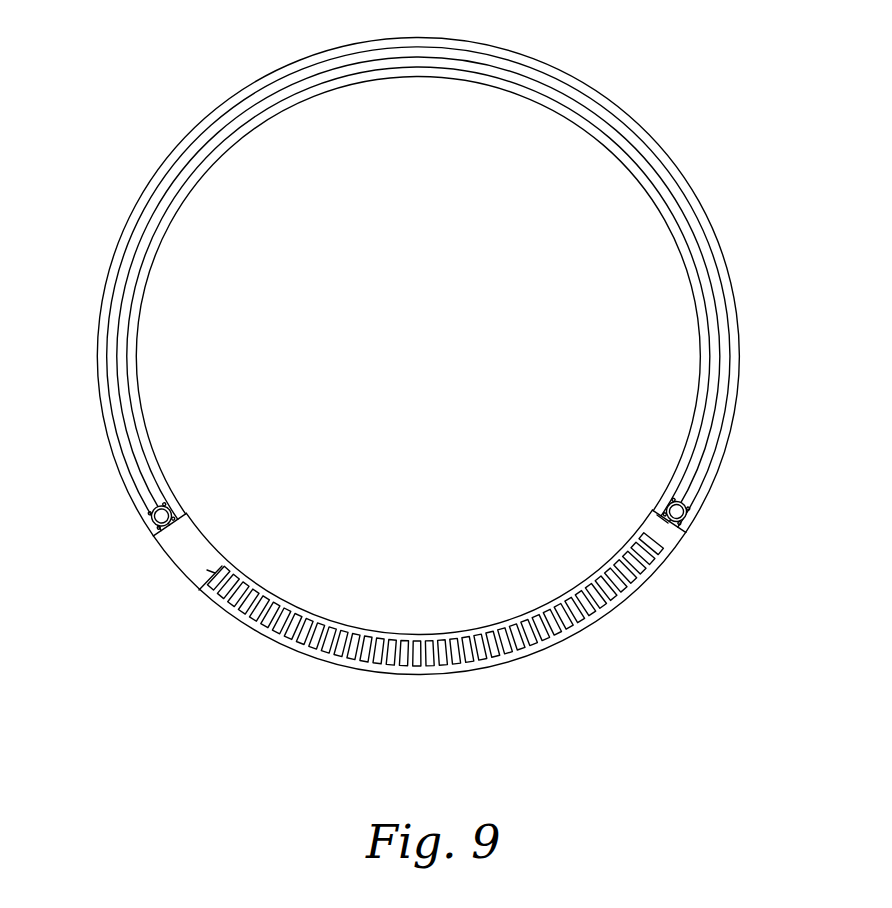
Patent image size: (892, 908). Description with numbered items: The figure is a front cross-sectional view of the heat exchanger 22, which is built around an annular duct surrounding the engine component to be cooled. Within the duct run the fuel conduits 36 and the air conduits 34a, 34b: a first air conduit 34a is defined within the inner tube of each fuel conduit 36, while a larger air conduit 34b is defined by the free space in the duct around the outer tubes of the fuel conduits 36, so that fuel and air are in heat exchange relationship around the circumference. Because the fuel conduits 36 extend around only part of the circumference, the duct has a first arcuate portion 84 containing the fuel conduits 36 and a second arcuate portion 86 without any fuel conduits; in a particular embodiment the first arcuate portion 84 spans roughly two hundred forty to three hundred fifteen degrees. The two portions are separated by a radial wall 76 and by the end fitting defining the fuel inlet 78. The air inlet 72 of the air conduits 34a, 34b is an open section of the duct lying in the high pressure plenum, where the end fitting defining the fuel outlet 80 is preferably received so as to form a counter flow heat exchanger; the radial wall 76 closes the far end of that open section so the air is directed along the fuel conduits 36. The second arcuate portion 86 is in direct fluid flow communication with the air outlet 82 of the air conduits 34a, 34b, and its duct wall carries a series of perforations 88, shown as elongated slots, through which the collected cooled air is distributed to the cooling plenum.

The heat exchanger 22 is at (415, 371).
The first arcuate portion 84 is at (398, 287).
The fuel conduit 36 is at (103, 338).
The air conduit 34a is at (708, 400).
The air conduit 34b is at (688, 443).
The outlet 80 is at (163, 515).
The inlet 78 is at (680, 512).
The inlet 72 is at (190, 555).
The radial wall 76 is at (207, 570).
The perforations 88 is at (360, 637).
The second arcuate portion 86 is at (444, 612).
The outlet 82 is at (657, 515).